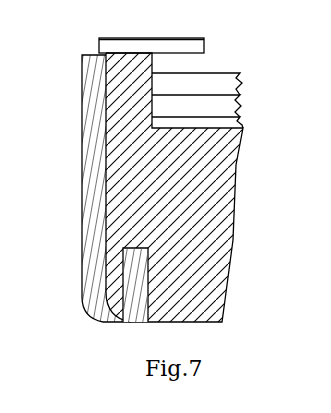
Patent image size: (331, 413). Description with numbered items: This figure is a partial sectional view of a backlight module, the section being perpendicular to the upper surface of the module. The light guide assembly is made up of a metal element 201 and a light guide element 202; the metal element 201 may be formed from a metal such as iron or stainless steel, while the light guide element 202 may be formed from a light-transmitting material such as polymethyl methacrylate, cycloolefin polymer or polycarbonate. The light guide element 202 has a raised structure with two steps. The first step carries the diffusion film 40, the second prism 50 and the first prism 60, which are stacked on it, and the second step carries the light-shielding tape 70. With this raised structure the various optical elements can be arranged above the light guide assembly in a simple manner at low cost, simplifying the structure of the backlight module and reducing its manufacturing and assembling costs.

The light-shielding tape 70 is at (205, 44).
The first prism 60 is at (240, 83).
The second prism 50 is at (240, 105).
The diffusion film 40 is at (238, 126).
The metal element 201 is at (95, 137).
The light guide element 202 is at (233, 153).